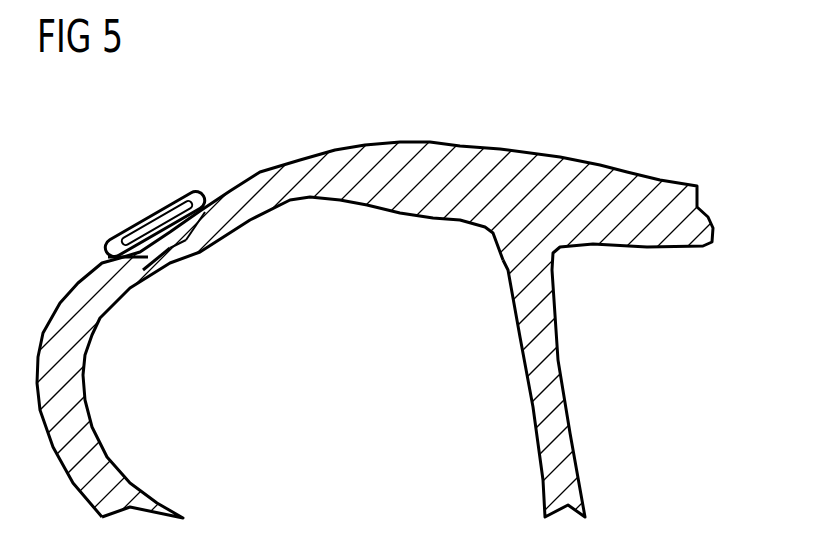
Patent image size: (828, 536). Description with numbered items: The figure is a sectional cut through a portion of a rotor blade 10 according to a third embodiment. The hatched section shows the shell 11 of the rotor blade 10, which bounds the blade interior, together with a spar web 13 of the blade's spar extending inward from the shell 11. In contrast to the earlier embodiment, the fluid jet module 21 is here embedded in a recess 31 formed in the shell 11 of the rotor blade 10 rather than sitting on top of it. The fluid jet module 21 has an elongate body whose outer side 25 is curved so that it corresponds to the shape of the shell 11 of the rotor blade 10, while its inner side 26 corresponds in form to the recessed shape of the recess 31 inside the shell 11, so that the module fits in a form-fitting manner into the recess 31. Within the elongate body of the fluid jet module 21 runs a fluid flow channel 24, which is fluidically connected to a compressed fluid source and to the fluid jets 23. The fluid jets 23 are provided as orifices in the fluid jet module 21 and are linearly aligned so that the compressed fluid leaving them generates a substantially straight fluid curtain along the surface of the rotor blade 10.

The rotor blade 10 is at (433, 118).
The shell 11 is at (303, 167).
The spar web 13 is at (553, 388).
The fluid jet module 21 is at (199, 199).
The fluid jets 23 is at (150, 225).
The fluid flow channel 24 is at (149, 258).
The outer side 25 is at (137, 235).
The inner side 26 is at (183, 248).
The recess 31 is at (195, 218).